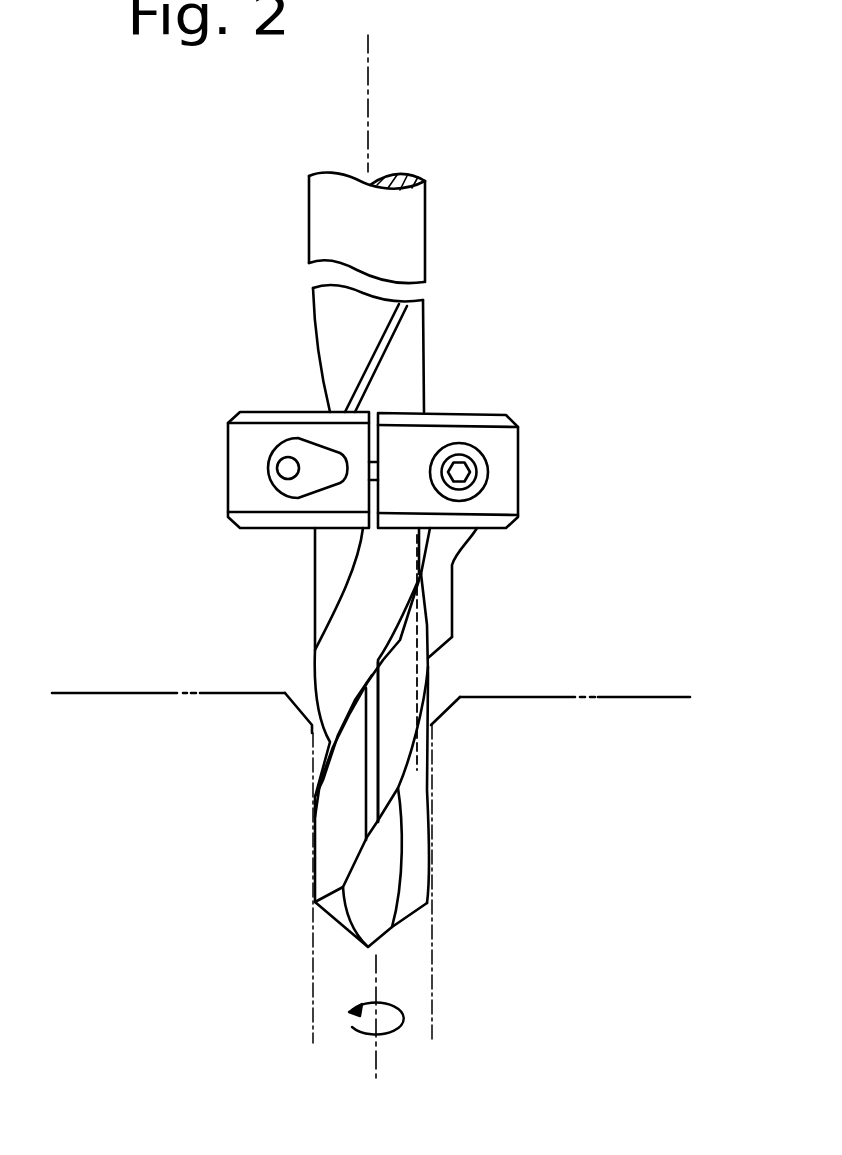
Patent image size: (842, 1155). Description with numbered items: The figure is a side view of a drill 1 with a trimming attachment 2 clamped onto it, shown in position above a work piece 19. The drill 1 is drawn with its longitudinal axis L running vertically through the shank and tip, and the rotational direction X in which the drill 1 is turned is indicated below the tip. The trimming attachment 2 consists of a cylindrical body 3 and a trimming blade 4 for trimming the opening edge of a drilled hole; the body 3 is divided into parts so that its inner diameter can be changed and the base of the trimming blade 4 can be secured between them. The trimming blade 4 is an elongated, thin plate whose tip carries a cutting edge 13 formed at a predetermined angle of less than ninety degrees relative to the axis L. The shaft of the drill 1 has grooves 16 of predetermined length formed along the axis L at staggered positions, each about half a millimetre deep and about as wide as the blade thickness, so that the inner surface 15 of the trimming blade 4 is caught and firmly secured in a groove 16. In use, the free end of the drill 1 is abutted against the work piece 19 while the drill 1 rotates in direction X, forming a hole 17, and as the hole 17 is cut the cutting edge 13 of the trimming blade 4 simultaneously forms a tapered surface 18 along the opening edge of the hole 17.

The drill 1 is at (427, 223).
The trimming attachment 2 is at (405, 470).
The cylindrical body 3 is at (508, 478).
The trimming blade 4 is at (461, 649).
The cutting edge 13 is at (437, 650).
The inner surface of the trimming blade 15 is at (412, 632).
The grooves 16 is at (342, 798).
The hole 17 is at (313, 735).
The tapered surface 18 is at (296, 690).
The work piece 19 is at (371, 832).
The axis L is at (367, 78).
The rotational direction X is at (407, 1020).